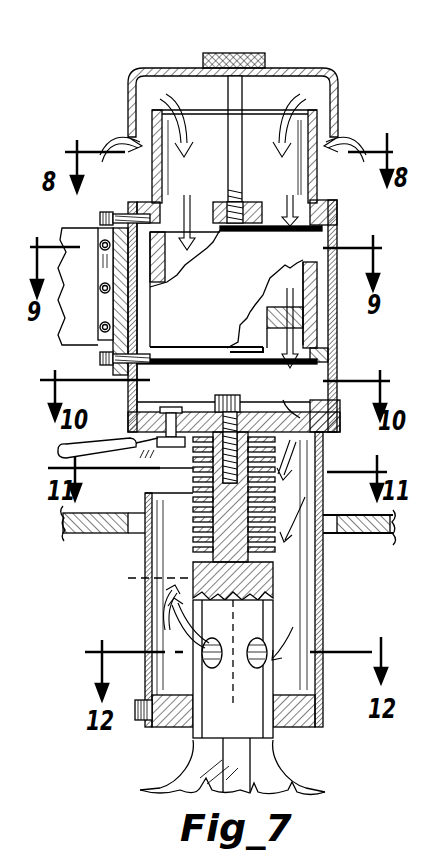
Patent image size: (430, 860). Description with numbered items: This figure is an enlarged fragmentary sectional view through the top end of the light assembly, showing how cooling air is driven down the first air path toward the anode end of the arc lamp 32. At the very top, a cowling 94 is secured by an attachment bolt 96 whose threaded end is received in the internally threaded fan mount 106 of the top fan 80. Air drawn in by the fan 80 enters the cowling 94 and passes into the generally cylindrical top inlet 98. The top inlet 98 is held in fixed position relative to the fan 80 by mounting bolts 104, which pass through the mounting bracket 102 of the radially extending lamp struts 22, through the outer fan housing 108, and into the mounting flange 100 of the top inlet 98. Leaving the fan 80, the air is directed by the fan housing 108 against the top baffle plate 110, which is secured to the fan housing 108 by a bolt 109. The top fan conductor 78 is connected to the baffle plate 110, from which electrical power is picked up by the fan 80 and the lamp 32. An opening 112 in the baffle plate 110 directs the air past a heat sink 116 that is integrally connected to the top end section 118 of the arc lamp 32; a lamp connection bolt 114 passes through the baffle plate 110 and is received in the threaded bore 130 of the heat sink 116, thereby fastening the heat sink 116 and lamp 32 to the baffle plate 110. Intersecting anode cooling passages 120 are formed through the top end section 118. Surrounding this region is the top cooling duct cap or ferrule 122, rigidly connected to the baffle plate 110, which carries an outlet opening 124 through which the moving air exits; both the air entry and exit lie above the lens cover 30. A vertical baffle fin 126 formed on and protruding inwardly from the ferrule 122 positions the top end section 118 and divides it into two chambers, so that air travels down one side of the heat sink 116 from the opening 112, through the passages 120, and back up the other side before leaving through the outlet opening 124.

The attachment bolt 96 is at (254, 54).
The cowling 94 is at (314, 70).
The top inlet 98 is at (318, 184).
The mounting flange 100 is at (132, 203).
The fan mount 106 is at (268, 190).
The mounting bolts 104 is at (152, 262).
The top fan 80 is at (307, 280).
The outer fan housing 108 is at (340, 330).
The lamp struts 22 is at (68, 310).
The mounting bracket 102 is at (101, 357).
The lamp connection bolt 114 is at (226, 395).
The top baffle plate 110 is at (192, 410).
The opening 112 is at (283, 402).
The bolt 109 is at (128, 413).
The top fan conductor 78 is at (55, 457).
The outlet opening 124 is at (175, 470).
The threaded bore 130 is at (240, 470).
The heat sink 116 is at (193, 530).
The top cooling duct cap or ferrule 122 is at (323, 558).
The lens cover 30 is at (392, 523).
The vertical baffle fin 126 is at (135, 584).
The top end section 118 is at (262, 618).
The anode cooling passages 120 is at (262, 658).
The arc lamp 32 is at (168, 786).